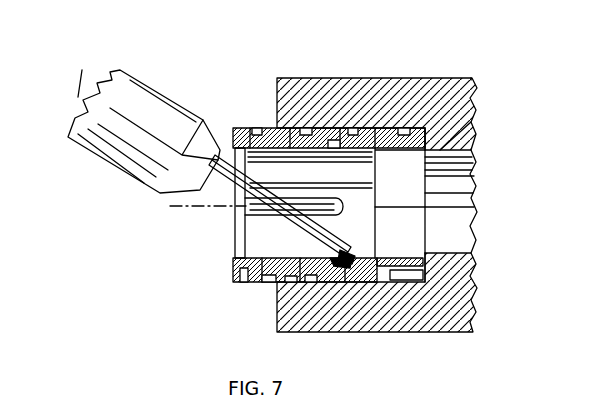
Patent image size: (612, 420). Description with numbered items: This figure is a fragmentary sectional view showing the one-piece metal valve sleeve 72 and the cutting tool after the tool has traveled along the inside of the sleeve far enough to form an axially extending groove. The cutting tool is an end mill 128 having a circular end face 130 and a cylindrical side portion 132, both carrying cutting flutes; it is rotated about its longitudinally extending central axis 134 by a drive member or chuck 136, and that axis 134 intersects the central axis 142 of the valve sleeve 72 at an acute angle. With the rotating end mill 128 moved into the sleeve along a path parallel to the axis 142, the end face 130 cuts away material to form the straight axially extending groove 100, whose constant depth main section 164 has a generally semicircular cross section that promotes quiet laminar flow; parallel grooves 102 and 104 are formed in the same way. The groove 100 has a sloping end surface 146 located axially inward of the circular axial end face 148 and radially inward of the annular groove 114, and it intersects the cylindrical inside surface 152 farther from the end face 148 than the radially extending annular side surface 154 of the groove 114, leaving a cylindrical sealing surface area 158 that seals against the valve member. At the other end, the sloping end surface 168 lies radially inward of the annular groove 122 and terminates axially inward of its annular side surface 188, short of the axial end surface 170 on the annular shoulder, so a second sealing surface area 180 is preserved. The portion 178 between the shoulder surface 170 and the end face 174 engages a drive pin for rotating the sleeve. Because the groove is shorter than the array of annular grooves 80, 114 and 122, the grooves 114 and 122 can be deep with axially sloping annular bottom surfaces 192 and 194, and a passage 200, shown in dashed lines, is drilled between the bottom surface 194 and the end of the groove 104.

The valve sleeve 72 is at (437, 156).
The annular groove 80 is at (313, 133).
The axially extending groove 100 is at (330, 258).
The axially extending groove 102 is at (328, 208).
The axially extending groove 104 is at (285, 142).
The annular groove 114 is at (268, 114).
The annular groove 122 is at (364, 124).
The end mill 128 is at (246, 212).
The circular end face 130 is at (368, 232).
The cylindrical side portion 132 is at (311, 233).
The longitudinally extending central axis 134 is at (93, 44).
The drive member or chuck 136 is at (100, 152).
The central axis 142 is at (487, 207).
The sloping end surface 146 is at (272, 278).
The circular axial end face 148 is at (235, 264).
The cylindrical inside surface 152 is at (450, 172).
The annular side surface 154 is at (263, 272).
The cylindrical sealing surface area 158 is at (247, 257).
The main section 164 is at (310, 260).
The sloping end surface 168 is at (345, 262).
The axial end surface 170 is at (378, 212).
The end face 174 is at (420, 262).
The portion of the valve sleeve 178 is at (430, 147).
The second sealing surface area 180 is at (360, 176).
The annular side surface 188 is at (441, 320).
The axially sloping annular bottom surface 192 is at (262, 131).
The axially sloping annular bottom surface 194 is at (348, 143).
The passage 200 is at (333, 130).